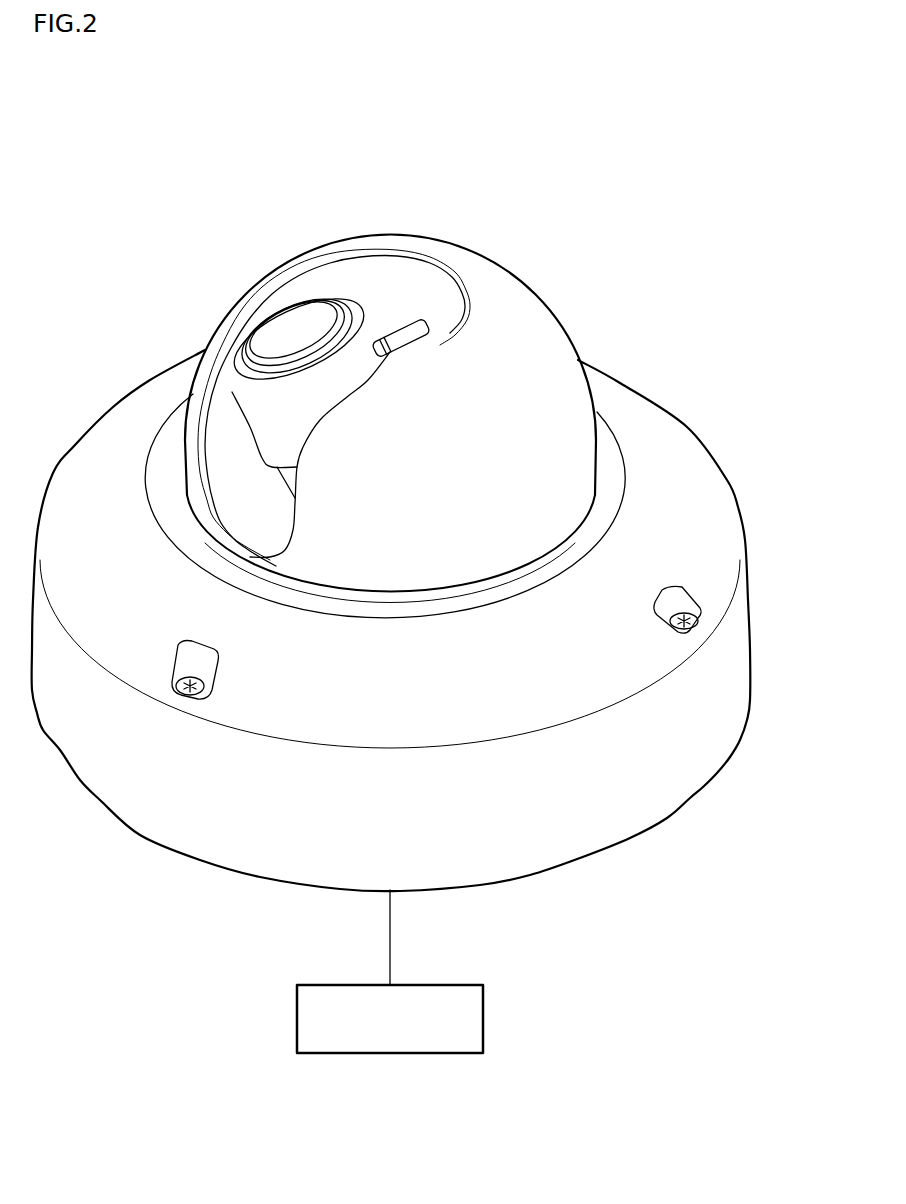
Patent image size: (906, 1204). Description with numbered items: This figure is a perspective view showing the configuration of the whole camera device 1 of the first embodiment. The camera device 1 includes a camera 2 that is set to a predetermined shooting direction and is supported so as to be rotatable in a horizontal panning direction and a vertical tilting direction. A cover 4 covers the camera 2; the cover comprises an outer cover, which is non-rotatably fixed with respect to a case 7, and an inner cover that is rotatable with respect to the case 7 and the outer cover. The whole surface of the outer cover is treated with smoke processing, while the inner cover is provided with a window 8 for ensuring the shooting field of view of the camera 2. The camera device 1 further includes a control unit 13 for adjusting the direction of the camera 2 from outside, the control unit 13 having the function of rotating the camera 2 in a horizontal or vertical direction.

The camera device 1 is at (418, 564).
The camera 2 is at (252, 290).
The cover 4 is at (517, 283).
The case 7 is at (755, 655).
The window 8 is at (352, 275).
The control unit 13 is at (487, 1018).